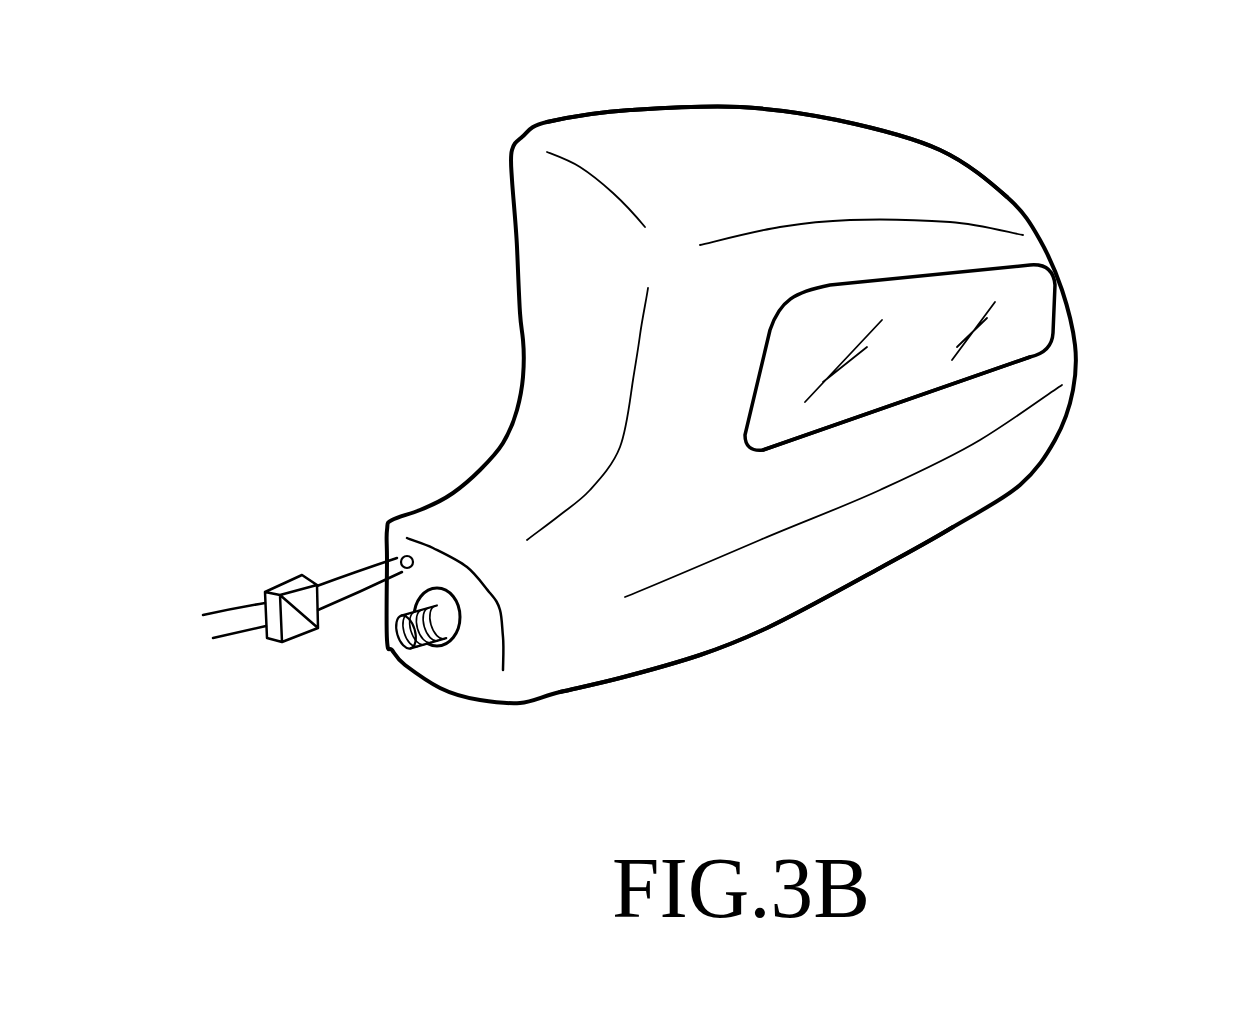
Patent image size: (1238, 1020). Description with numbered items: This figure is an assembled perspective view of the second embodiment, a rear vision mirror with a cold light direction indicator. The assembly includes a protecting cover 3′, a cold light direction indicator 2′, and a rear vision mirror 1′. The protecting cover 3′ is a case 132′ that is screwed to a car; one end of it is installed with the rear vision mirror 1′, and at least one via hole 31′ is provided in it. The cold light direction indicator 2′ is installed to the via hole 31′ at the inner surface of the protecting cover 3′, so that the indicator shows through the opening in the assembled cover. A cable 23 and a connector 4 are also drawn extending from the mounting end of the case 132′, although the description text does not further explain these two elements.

The rear vision mirror 1′ is at (517, 345).
The cold light direction indicator 2′ is at (1023, 337).
The protecting cover 3′ is at (837, 120).
The via hole 31′ is at (1000, 367).
The case 132′ is at (763, 633).
The cable 23 is at (360, 575).
The connector 4 is at (300, 623).